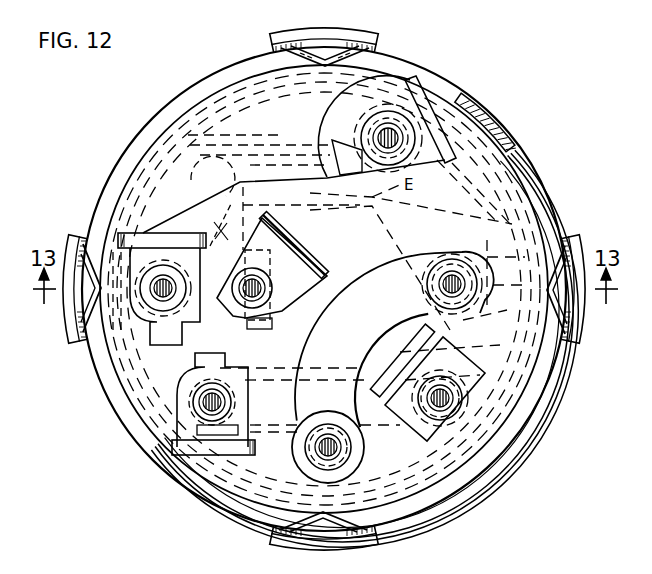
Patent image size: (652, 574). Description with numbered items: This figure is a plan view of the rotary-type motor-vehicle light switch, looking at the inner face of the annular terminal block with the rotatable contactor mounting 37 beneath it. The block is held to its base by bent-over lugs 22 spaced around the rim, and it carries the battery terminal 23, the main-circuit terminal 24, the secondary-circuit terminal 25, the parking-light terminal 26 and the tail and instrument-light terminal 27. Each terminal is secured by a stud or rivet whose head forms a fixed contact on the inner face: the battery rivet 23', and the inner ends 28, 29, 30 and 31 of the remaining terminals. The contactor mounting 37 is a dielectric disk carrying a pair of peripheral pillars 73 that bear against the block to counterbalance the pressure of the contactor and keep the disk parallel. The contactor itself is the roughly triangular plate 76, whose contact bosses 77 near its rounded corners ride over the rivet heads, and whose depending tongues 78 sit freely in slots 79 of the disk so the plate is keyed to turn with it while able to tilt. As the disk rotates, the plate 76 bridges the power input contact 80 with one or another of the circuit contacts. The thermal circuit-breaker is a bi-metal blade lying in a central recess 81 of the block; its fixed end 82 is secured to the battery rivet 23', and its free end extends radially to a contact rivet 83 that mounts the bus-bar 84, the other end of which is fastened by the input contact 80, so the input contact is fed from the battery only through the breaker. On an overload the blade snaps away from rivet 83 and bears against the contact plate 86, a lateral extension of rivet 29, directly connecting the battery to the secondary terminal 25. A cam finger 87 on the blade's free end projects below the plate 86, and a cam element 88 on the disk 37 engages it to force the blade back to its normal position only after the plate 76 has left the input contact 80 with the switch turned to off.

The bent-over lugs 22 is at (330, 34).
The battery terminal 23 is at (311, 245).
The battery terminal rivet 23' is at (272, 273).
The main-circuit terminal 24 is at (425, 340).
The secondary-circuit terminal 25 is at (428, 102).
The parking-light terminal 26 is at (128, 233).
The tail-light terminal 27 is at (160, 457).
The inner end of main-circuit terminal 28 is at (443, 420).
The inner end of secondary-circuit terminal 29 is at (383, 135).
The inner end of parking-light terminal 30 is at (160, 292).
The inner end of tail-light terminal 31 is at (205, 402).
The contactor mounting 37 is at (225, 110).
The peripheral pillars 73 is at (532, 150).
The contactor plate 76 is at (248, 358).
The contact bosses 77 is at (170, 152).
The tongues 78 is at (150, 192).
The slots 79 is at (268, 336).
The power input contact 80 is at (334, 450).
The central recess 81 is at (271, 399).
The fixed end of bi-metal strip 82 is at (212, 224).
The contact rivet 83 is at (445, 284).
The bus-bar 84 is at (350, 397).
The contact plate 86 is at (556, 206).
The cam finger 87 is at (573, 243).
The cam element 88 is at (530, 361).